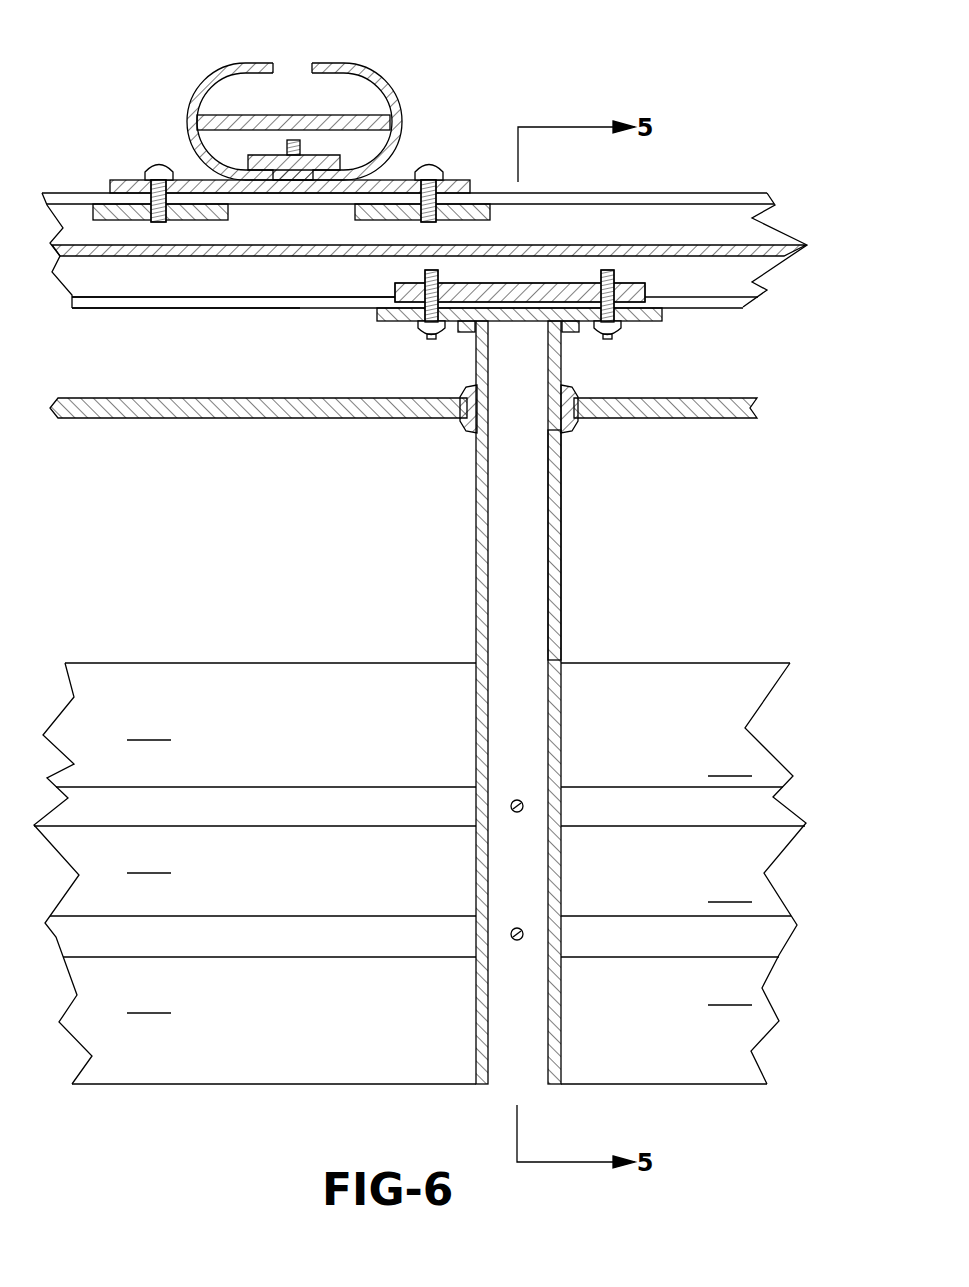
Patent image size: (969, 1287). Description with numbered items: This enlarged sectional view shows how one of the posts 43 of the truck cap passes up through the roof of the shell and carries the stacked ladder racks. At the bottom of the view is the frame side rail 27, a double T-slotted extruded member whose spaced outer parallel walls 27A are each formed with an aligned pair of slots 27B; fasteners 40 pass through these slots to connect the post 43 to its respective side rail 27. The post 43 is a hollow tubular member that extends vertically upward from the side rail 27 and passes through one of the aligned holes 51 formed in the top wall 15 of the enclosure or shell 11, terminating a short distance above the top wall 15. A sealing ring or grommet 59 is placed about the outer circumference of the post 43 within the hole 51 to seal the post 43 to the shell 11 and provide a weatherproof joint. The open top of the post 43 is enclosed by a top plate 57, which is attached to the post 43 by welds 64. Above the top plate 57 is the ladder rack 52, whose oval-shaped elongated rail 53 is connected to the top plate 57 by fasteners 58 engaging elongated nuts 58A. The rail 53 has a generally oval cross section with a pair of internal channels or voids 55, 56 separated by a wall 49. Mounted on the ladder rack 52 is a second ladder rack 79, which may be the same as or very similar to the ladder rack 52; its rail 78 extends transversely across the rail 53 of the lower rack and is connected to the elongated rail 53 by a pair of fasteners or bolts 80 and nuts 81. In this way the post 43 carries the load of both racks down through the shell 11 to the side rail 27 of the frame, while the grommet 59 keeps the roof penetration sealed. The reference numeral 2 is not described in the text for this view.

The panel assembly 2 is at (420, 841).
The enclosure 11 is at (403, 413).
The top wall 15 is at (360, 420).
The side rails 27 is at (420, 841).
The outer parallel walls 27A is at (439, 864).
The slots 27B is at (348, 798).
The fasteners 40 is at (523, 806).
The posts 43 is at (553, 534).
The wall 49 is at (98, 253).
The holes 51 is at (555, 408).
The ladder rack 52 is at (178, 314).
The rails 53 is at (202, 309).
The internal channel 55 is at (700, 210).
The internal channel 56 is at (700, 280).
The top plates 57 is at (383, 316).
The fasteners 58 is at (418, 331).
The elongated nuts 58A is at (410, 287).
The sealing ring 59 is at (468, 433).
The welds 64 is at (466, 333).
The racks 78 is at (396, 84).
The second ladder rack 79 is at (228, 57).
The bolts 80 is at (149, 166).
The nuts 81 is at (100, 213).